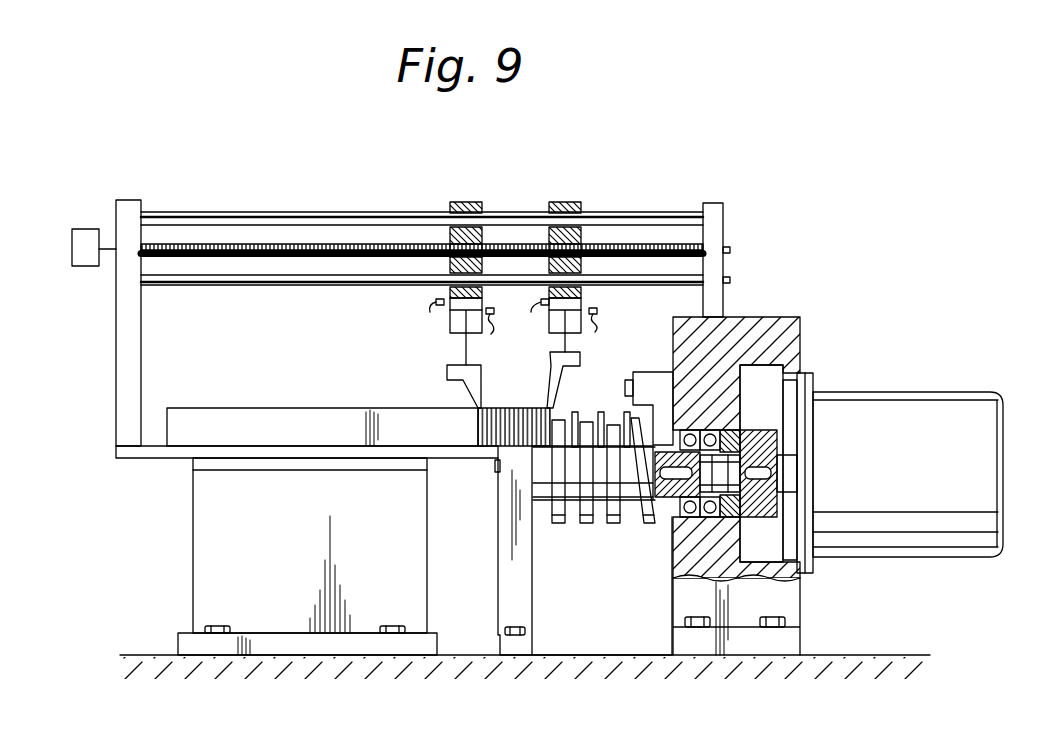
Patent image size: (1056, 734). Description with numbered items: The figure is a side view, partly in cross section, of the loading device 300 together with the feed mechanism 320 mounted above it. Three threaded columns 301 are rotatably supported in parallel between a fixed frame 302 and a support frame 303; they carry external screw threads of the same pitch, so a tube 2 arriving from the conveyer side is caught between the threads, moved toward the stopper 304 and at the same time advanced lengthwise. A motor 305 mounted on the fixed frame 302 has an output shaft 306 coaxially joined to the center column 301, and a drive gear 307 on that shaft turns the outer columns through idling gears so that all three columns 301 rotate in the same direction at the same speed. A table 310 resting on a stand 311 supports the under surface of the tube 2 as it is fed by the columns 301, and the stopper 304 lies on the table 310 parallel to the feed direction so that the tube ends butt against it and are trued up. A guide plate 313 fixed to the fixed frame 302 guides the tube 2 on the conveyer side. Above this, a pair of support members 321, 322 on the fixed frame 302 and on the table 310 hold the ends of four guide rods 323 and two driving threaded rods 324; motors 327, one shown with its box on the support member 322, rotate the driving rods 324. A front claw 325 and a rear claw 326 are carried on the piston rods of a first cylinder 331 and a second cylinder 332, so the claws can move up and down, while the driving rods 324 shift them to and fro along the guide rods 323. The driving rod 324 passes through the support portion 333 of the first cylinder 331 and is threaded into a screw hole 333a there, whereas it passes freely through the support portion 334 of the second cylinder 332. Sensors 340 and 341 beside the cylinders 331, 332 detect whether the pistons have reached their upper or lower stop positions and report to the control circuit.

The tube 2 is at (497, 408).
The loading device 300 is at (778, 302).
The threaded columns 301 is at (557, 524).
The fixed frame 302 is at (802, 342).
The support frame 303 is at (495, 598).
The stopper 304 is at (296, 408).
The motor 305 is at (884, 398).
The output shaft 306 is at (768, 452).
The drive gear 307 is at (768, 512).
The table 310 is at (457, 456).
The stand 311 is at (428, 537).
The guide plate 313 is at (662, 372).
The feed mechanism 320 is at (596, 207).
The support member 321 is at (725, 220).
The support member 322 is at (116, 301).
The guide rods 323 is at (266, 218).
The driving threaded rods 324 is at (325, 254).
The front claw 325 is at (447, 373).
The rear claw 326 is at (579, 358).
The motors 327 is at (84, 229).
The first cylinder 331 is at (450, 330).
The second cylinder 332 is at (549, 335).
The support portion 333 is at (443, 238).
The screw hole 333a is at (457, 251).
The support portion 334 is at (545, 238).
The sensor 340 is at (428, 313).
The sensor 341 is at (553, 333).